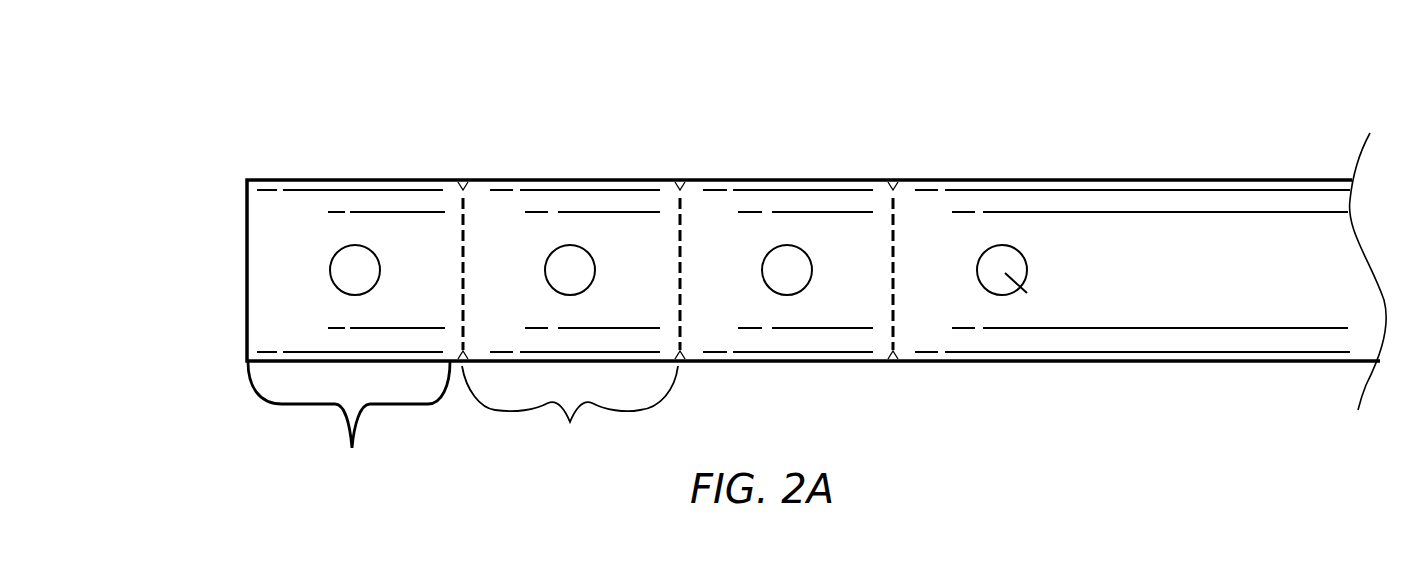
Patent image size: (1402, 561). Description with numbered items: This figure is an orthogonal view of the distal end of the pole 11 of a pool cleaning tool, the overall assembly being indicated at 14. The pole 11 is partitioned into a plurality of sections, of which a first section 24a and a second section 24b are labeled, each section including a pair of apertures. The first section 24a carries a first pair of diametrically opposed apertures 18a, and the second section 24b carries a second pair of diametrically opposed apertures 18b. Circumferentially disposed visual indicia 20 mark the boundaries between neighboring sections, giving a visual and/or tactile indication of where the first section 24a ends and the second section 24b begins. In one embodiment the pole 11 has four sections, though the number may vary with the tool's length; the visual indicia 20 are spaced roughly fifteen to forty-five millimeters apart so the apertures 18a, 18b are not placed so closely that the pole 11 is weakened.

The tape strip assembly 14 is at (245, 96).
The pole 11 is at (1128, 181).
The visual indicia 20 is at (892, 224).
The first pair of diametrically opposed apertures 18a is at (360, 257).
The second pair of diametrically opposed apertures 18b is at (572, 258).
The first section 24a is at (349, 432).
The second section 24b is at (570, 419).